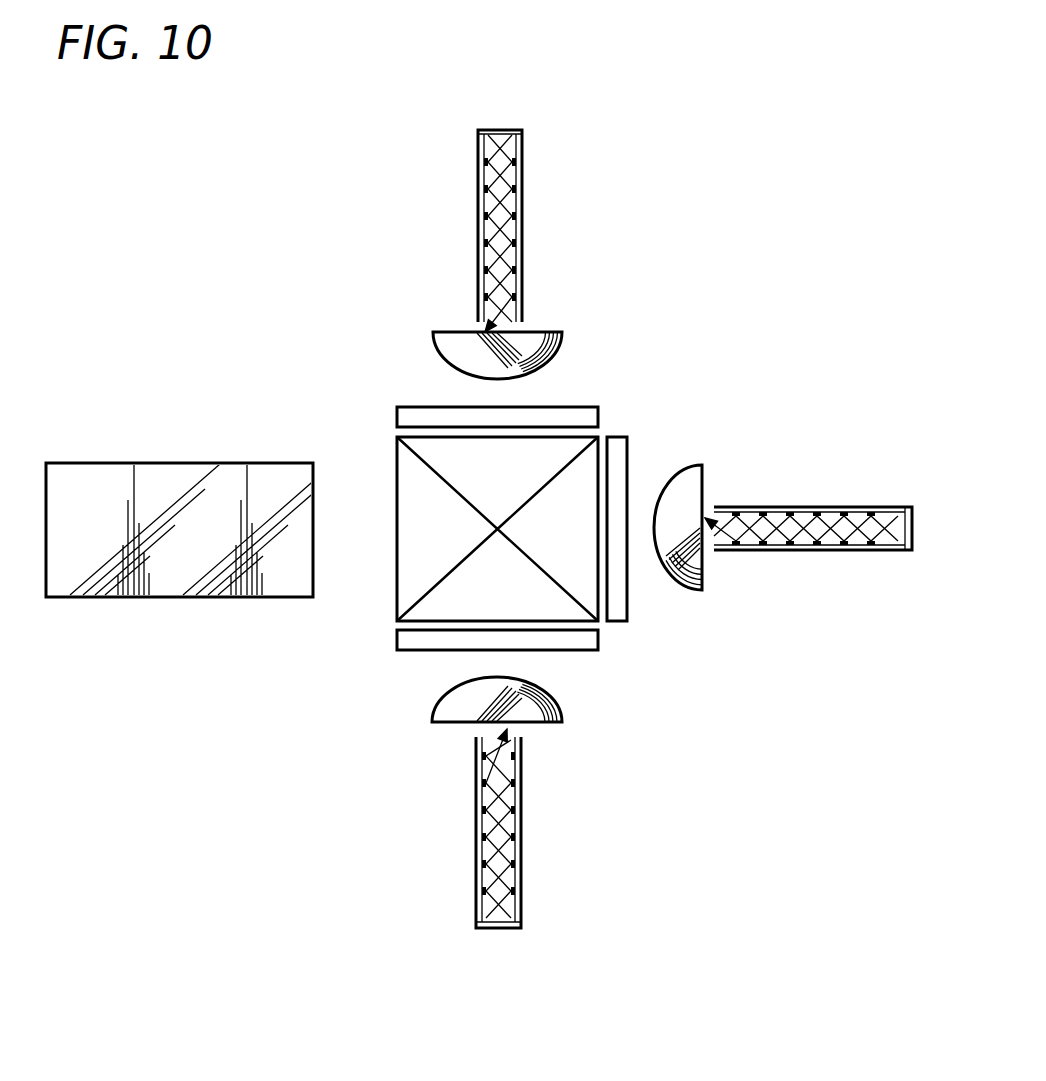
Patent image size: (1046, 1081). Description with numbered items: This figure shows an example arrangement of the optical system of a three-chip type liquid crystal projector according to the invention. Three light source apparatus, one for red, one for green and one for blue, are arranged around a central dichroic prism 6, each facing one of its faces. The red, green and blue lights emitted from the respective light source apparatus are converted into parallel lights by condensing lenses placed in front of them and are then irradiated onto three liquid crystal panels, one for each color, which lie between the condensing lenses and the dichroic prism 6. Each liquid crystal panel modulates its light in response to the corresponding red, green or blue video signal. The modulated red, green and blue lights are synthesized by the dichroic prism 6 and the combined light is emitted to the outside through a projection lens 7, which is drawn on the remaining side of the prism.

The dichroic prism 6 is at (396, 456).
The projection lens 7 is at (185, 461).